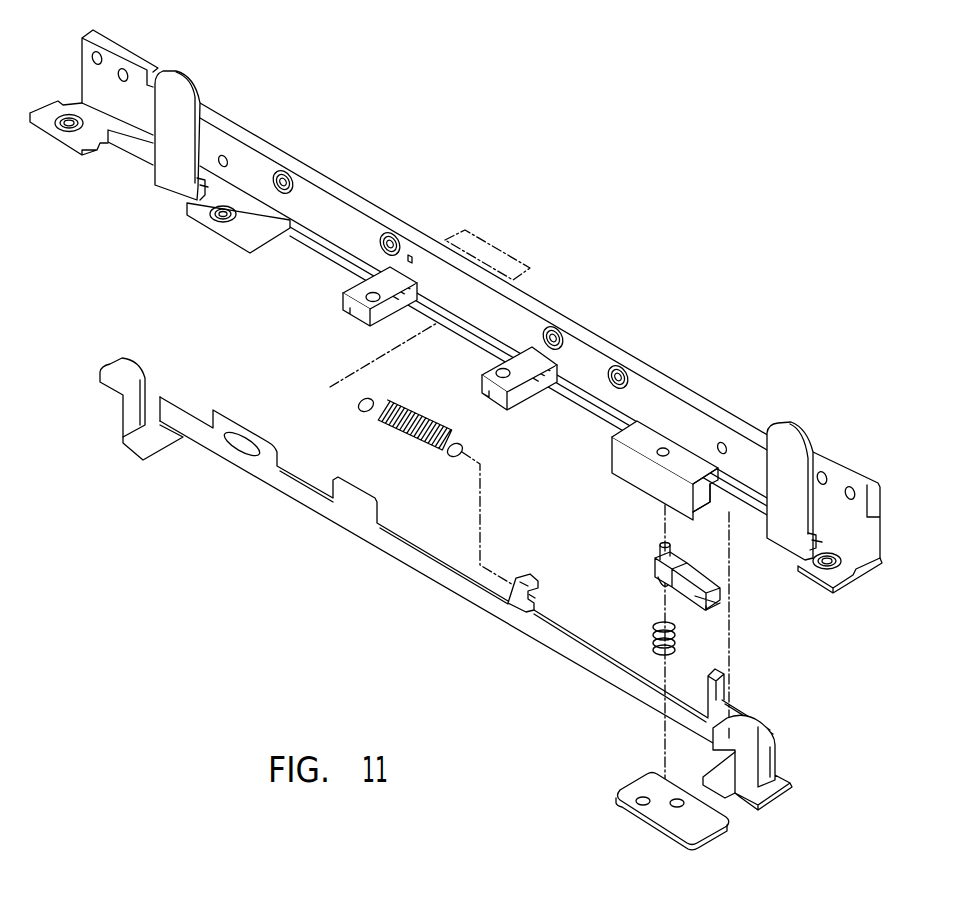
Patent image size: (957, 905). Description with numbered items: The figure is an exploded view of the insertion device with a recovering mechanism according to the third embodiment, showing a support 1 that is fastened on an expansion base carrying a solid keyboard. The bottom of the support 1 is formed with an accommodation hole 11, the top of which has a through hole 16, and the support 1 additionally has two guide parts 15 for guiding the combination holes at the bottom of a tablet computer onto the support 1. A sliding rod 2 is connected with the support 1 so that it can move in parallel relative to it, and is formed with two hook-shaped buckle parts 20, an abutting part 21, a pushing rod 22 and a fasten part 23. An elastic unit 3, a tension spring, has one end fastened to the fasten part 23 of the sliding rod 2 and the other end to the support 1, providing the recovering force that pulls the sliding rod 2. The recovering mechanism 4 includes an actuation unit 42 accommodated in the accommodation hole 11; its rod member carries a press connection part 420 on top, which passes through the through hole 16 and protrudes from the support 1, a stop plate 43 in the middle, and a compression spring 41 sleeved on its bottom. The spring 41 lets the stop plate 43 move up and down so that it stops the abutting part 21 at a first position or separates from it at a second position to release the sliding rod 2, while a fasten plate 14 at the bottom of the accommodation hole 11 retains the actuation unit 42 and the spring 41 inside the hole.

The support 1 is at (680, 405).
The sliding rod 2 is at (418, 565).
The elastic unit 3 is at (415, 422).
The recovering mechanism 4 is at (585, 540).
The accommodation hole 11 is at (710, 492).
The fasten plate 14 is at (645, 790).
The guide part 15 is at (178, 118).
The through hole 16 is at (656, 452).
The buckle part 20 is at (120, 375).
The abutting part 21 is at (722, 785).
The pushing rod 22 is at (723, 672).
The fasten part 23 is at (527, 578).
The spring 41 is at (653, 630).
The actuation unit 42 is at (655, 574).
The stop plate 43 is at (712, 605).
The press connection part 420 is at (658, 553).